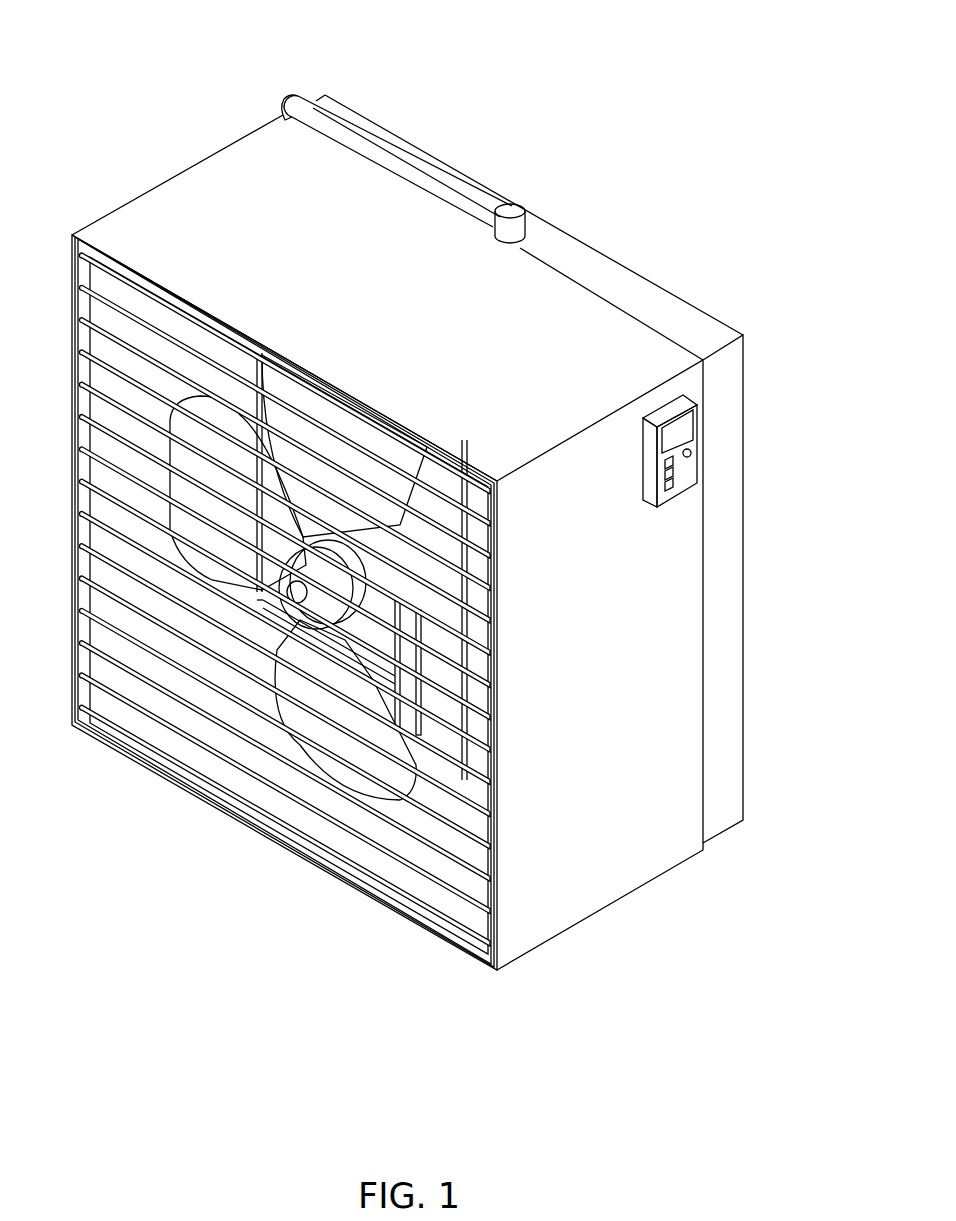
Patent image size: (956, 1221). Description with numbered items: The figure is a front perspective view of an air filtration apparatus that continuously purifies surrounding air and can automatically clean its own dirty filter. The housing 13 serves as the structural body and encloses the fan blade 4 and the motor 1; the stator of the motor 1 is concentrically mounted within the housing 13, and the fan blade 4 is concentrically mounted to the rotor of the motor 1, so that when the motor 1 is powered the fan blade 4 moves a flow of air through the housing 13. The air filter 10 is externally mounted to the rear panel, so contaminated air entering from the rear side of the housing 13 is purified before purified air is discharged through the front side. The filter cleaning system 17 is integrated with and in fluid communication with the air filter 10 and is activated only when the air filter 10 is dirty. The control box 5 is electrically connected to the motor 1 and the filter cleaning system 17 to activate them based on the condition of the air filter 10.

The motor 1 is at (432, 482).
The fan blade 4 is at (193, 552).
The control box 5 is at (700, 465).
The air filter 10 is at (737, 641).
The housing 13 is at (201, 190).
The filter cleaning system 17 is at (294, 82).